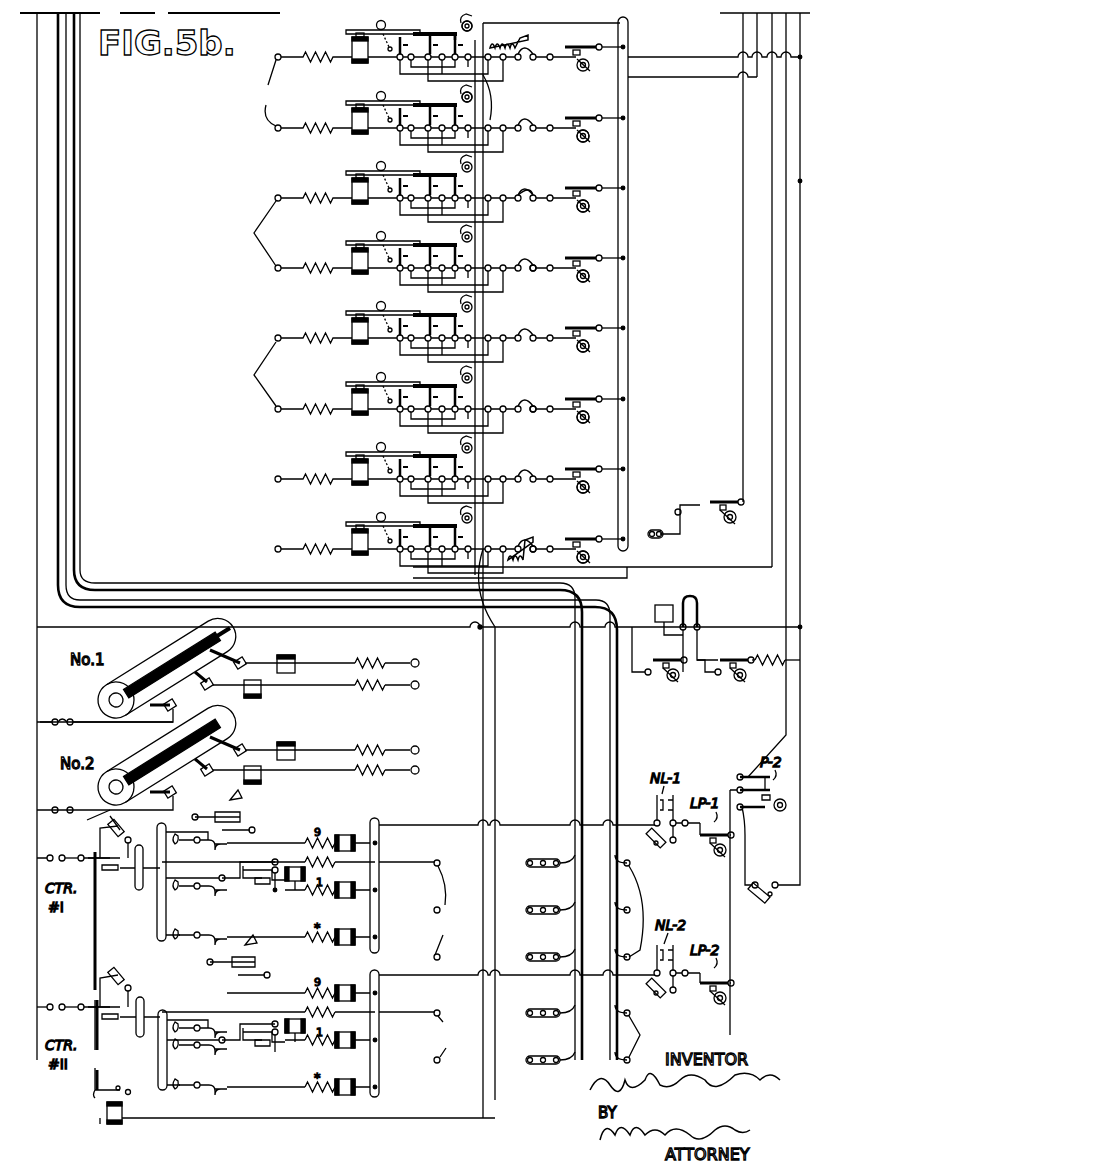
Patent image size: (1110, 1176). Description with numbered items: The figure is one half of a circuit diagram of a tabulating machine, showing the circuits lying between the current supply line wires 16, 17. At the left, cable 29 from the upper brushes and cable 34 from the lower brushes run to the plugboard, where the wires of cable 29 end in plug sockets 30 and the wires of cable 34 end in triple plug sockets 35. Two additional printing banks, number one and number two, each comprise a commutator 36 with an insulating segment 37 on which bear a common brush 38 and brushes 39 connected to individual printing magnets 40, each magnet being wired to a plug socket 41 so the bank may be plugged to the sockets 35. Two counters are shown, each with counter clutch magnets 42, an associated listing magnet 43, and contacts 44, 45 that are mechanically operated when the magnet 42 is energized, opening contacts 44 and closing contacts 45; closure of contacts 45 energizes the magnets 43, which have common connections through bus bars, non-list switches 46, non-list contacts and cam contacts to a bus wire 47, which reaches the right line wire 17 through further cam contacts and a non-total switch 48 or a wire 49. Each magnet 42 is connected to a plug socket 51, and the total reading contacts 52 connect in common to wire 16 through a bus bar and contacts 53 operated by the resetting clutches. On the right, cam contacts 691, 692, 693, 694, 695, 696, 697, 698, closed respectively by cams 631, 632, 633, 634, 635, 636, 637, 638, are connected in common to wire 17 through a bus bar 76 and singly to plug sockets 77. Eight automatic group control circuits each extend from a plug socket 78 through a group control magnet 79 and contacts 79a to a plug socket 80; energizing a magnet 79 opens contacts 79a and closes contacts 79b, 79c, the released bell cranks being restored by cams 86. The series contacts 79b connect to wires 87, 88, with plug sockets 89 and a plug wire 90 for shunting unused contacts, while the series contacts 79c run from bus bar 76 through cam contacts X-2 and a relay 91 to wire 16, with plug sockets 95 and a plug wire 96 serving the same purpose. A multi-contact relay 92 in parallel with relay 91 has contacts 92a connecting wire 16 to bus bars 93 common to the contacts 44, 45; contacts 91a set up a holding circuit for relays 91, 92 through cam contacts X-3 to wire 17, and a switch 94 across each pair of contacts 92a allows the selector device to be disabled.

The left line wire 16 is at (37, 134).
The right line wire 17 is at (800, 181).
The cable 29 is at (78, 209).
The cable 34 is at (62, 282).
The plug socket 30 is at (628, 908).
The triple plug socket 35 is at (532, 867).
The commutator 36 is at (100, 680).
The insulating segment 37 is at (158, 672).
The common brush 38 is at (178, 694).
The brushes 39 is at (240, 658).
The printing magnet 40 is at (260, 697).
The plug socket 41 is at (420, 664).
The counter clutch magnet 42 is at (295, 885).
The listing magnet 43 is at (345, 827).
The contacts 44 is at (236, 860).
The contacts 45 is at (265, 890).
The non-list switch 46 is at (660, 852).
The bus wire 47 is at (730, 888).
The non-total switch 48 is at (762, 895).
The wire 49 is at (786, 245).
The plug socket 51 is at (440, 910).
The total reading contacts 52 is at (205, 845).
The contacts 53 is at (232, 812).
The bus bar 76 is at (629, 126).
The plug socket 77 is at (533, 275).
The plug socket 78 is at (254, 233).
The group control magnet 79 is at (352, 48).
The contacts 79a is at (395, 60).
The contacts 79b is at (430, 60).
The contacts 79c is at (466, 30).
The plug socket 80 is at (526, 60).
The cam 86 is at (472, 28).
The wire 87 is at (757, 42).
The wire 88 is at (772, 466).
The plug socket 89 is at (520, 205).
The plug wire 90 is at (522, 535).
The relay 91 is at (665, 605).
The contacts 91a is at (695, 596).
The multi-contact relay 92 is at (107, 1115).
The contacts 92a is at (110, 862).
The bus bar 93 is at (136, 880).
The switch 94 is at (110, 826).
The plug socket 95 is at (490, 75).
The plug wire 96 is at (520, 40).
The cam 631 is at (590, 556).
The cam 632 is at (588, 488).
The cam 633 is at (586, 420).
The cam 634 is at (586, 348).
The cam 635 is at (586, 278).
The cam 636 is at (585, 208).
The cam 637 is at (583, 140).
The cam 638 is at (628, 69).
The cam contacts 691 is at (570, 539).
The cam contacts 692 is at (570, 469).
The cam contacts 693 is at (570, 399).
The cam contacts 694 is at (570, 328).
The cam contacts 695 is at (570, 258).
The cam contacts 696 is at (570, 188).
The cam contacts 697 is at (575, 118).
The cam contacts 698 is at (585, 38).
The special cam contacts X-2 is at (652, 662).
The special cam contacts X-3 is at (724, 662).